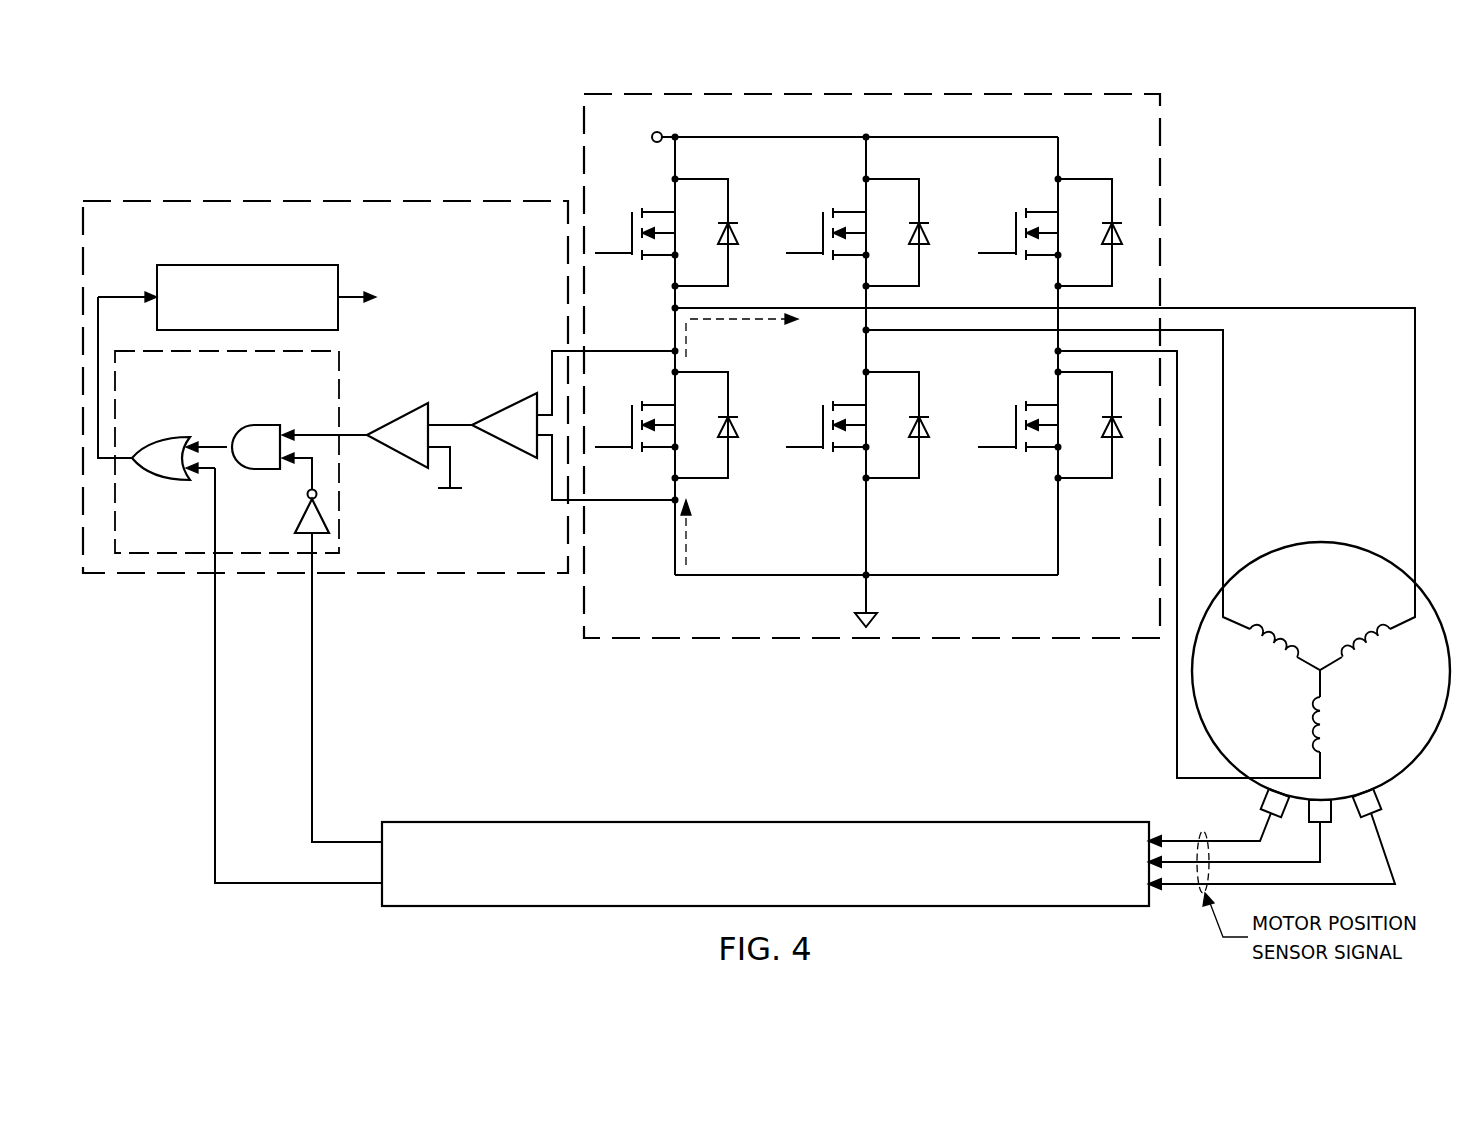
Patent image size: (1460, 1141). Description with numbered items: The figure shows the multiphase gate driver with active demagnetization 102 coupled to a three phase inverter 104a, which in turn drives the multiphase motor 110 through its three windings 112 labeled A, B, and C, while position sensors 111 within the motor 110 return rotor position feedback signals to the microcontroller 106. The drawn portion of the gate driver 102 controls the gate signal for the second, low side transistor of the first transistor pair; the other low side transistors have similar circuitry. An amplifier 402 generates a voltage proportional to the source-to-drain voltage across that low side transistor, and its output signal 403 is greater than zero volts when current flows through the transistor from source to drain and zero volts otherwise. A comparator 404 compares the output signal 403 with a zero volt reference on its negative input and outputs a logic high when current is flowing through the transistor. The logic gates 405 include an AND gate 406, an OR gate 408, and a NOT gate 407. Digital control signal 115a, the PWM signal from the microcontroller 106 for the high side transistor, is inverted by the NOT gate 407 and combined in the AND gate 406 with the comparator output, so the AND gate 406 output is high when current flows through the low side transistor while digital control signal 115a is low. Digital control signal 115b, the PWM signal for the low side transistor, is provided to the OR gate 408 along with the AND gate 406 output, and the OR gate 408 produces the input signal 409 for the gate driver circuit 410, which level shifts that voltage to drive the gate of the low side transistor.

The multiphase gate driver with active demagnetization 102 is at (188, 198).
The gate driver circuit 410 is at (247, 265).
The input signal 409 is at (128, 296).
The OR gate 408 is at (162, 435).
The AND gate 406 is at (256, 425).
The NOT gate 407 is at (295, 514).
The logic gates 405 is at (348, 496).
The comparator 404 is at (395, 423).
The output signal 403 is at (455, 425).
The amplifier 402 is at (498, 400).
The three phase inverter 104a is at (1172, 211).
The multiphase motor 110 is at (1355, 537).
The windings 112 is at (1262, 657).
The position sensors 111 is at (1260, 795).
The microcontroller 106 is at (765, 821).
The digital control signal 115a is at (313, 687).
The digital control signal 115b is at (214, 687).